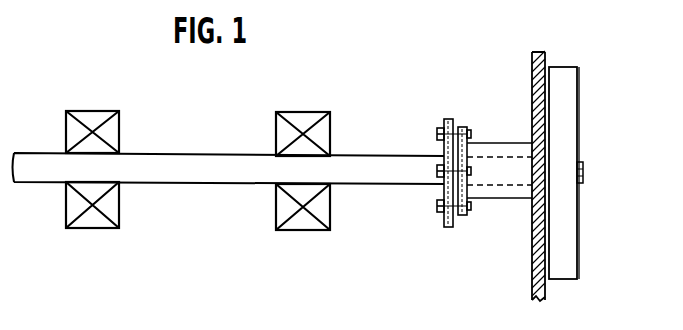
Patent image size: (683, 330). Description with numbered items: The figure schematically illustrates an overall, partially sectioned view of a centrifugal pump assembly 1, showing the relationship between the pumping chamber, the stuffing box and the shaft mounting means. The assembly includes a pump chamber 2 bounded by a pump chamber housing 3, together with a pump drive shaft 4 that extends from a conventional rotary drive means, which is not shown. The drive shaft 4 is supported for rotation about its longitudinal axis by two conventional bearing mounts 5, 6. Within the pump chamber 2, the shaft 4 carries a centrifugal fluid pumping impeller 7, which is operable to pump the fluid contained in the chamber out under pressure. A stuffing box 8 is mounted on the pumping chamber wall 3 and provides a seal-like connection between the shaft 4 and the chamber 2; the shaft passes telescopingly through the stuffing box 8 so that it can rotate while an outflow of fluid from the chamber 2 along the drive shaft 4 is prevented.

The centrifugal pump assembly 1 is at (363, 88).
The pump chamber 2 is at (621, 152).
The pump chamber housing 3 is at (532, 107).
The pump drive shaft 4 is at (394, 176).
The bearing mount 5 is at (112, 132).
The bearing mount 6 is at (282, 127).
The pump impeller 7 is at (567, 115).
The stuffing box 8 is at (502, 200).